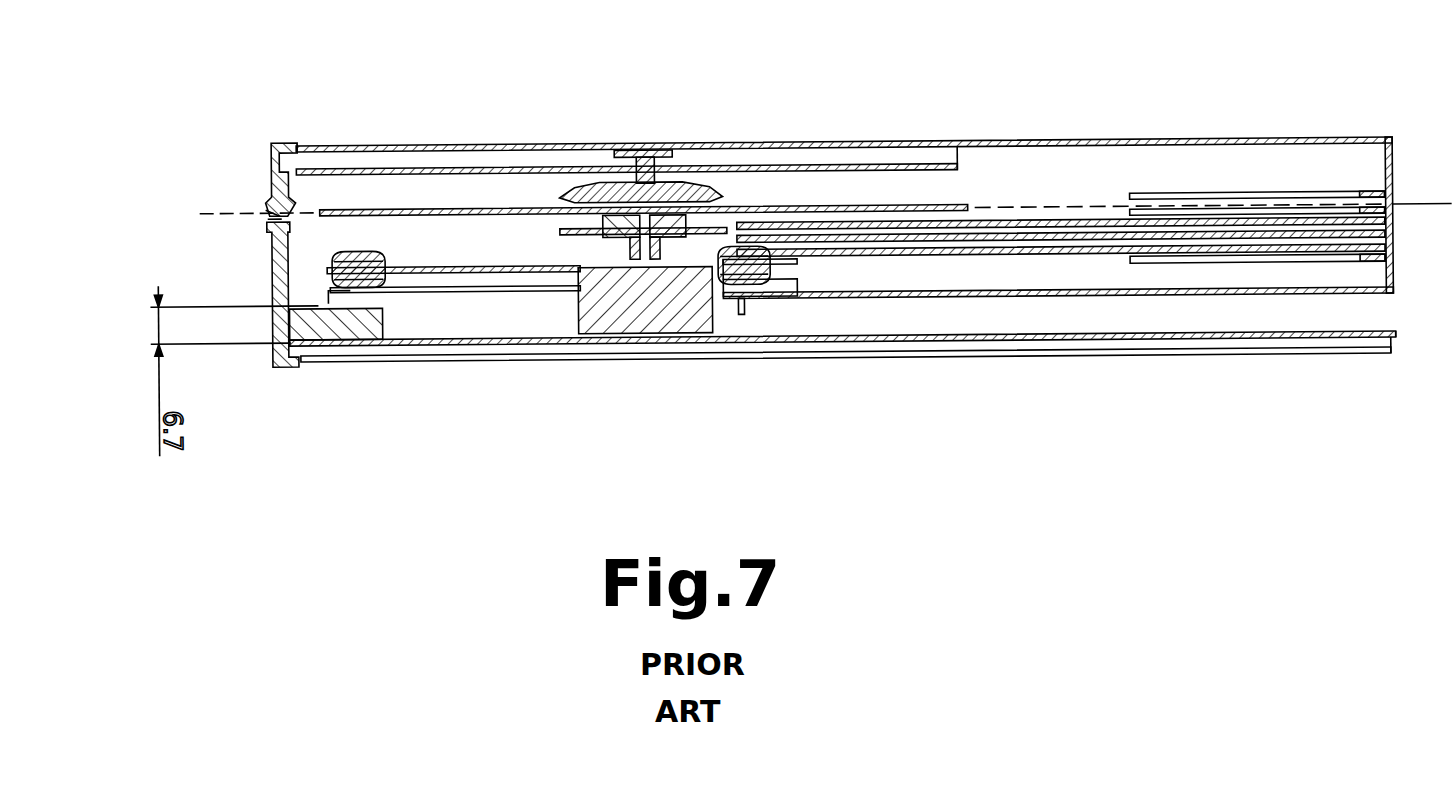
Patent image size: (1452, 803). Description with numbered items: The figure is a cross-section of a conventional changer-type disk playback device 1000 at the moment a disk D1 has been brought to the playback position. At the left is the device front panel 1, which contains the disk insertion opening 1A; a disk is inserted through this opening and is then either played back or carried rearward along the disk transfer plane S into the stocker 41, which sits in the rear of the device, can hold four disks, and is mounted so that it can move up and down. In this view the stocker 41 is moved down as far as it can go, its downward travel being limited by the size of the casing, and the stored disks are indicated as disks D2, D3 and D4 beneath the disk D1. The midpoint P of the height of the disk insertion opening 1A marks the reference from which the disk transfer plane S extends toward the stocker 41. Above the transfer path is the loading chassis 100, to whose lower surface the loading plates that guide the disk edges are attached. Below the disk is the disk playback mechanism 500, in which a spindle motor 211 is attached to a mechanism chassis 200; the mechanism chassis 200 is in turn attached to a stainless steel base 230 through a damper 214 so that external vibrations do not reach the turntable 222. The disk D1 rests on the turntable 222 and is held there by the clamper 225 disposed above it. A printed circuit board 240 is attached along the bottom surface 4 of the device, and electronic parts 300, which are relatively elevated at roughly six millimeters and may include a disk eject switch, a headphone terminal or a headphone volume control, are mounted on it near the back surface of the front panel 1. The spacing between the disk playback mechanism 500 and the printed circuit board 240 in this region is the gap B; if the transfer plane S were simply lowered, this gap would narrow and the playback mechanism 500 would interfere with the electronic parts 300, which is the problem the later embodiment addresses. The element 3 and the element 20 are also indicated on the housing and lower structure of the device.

The device front panel 1 is at (273, 163).
The disk insertion opening 1A is at (272, 212).
The midpoint of disk insertion opening P is at (272, 225).
The housing 3 is at (1090, 145).
The bottom surface 4 is at (1073, 358).
The bracket 20 is at (855, 356).
The stocker 41 is at (1245, 200).
The loading chassis 100 is at (515, 165).
The mechanism chassis 200 is at (472, 275).
The spindle motor 211 is at (598, 330).
The damper 214 is at (338, 253).
The turntable 222 is at (600, 242).
The clamper 225 is at (587, 186).
The stainless steel base 230 is at (563, 275).
The printed circuit board 240 is at (547, 275).
The electronic parts 300 is at (353, 322).
The disk playback mechanism 500 is at (513, 251).
The conventional changer-type disk playback device 1000 is at (878, 128).
The gap B is at (222, 371).
The disk transfer plane S is at (1402, 213).
The disk D1 is at (950, 200).
The distance D2 is at (985, 222).
The distance D3 is at (905, 256).
The distance D4 is at (955, 240).